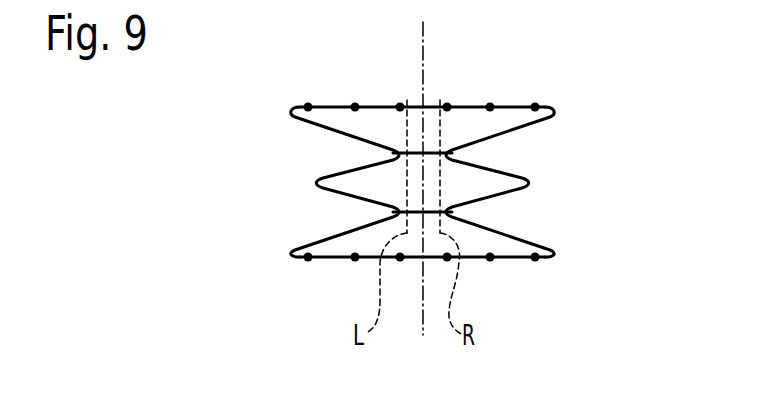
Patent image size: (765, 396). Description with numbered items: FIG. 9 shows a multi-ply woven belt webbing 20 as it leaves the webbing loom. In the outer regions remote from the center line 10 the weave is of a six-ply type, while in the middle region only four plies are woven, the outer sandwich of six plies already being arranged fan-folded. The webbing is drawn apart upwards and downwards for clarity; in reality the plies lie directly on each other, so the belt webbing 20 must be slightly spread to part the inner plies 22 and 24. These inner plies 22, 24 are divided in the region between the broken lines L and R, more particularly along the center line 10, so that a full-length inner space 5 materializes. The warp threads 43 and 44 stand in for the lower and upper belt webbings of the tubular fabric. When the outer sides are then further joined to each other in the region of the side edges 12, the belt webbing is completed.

The multi-ply woven belt webbing 20 is at (560, 100).
The side edges 12 is at (290, 254).
The warp threads 44 is at (308, 105).
The warp threads 43 is at (353, 259).
The inner ply 24 is at (416, 153).
The inner ply 22 is at (428, 212).
The inner space 5 is at (413, 132).
The center line 10 is at (424, 58).